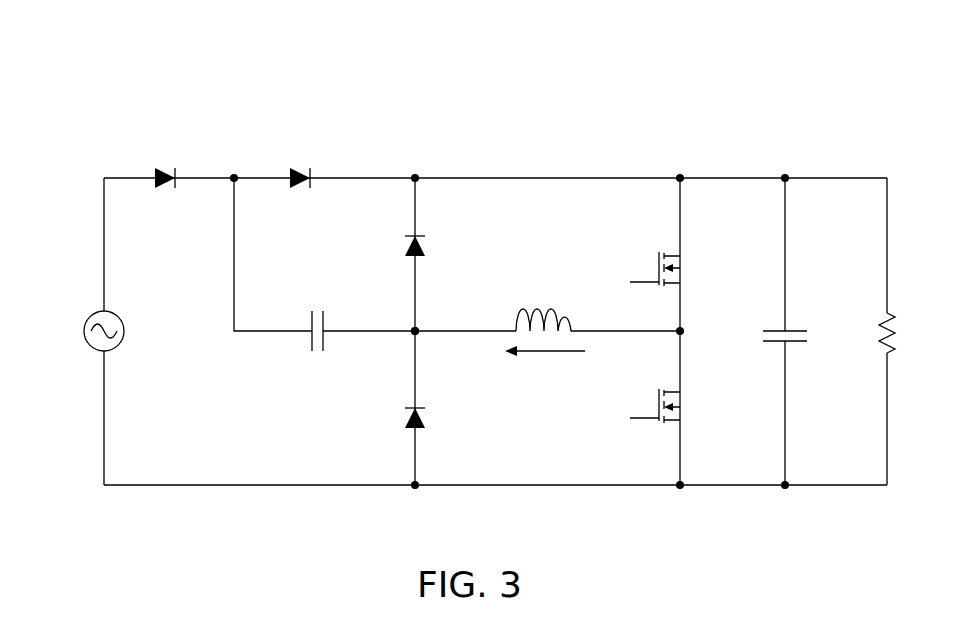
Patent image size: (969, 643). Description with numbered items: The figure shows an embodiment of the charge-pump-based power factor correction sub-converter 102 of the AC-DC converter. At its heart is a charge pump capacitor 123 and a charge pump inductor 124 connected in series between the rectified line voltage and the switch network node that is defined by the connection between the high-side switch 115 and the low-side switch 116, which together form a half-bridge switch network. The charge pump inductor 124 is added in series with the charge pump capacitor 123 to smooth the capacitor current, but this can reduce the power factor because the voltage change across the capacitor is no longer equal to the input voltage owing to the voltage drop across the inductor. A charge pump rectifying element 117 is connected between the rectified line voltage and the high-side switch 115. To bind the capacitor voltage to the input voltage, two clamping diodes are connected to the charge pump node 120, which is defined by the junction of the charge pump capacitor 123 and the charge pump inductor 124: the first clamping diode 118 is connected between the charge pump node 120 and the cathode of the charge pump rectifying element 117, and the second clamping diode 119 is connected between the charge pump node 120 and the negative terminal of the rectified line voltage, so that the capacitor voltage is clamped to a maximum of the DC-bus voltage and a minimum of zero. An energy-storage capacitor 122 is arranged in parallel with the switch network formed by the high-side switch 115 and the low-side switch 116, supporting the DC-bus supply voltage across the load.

The charge-pump-based power factor correction sub-converter 102 is at (142, 62).
The high-side switch 115 is at (682, 274).
The low-side switch 116 is at (728, 420).
The charge pump rectifying element 117 is at (291, 136).
The first clamping diode 118 is at (429, 234).
The second clamping diode 119 is at (418, 427).
The charge pump node 120 is at (415, 333).
The energy-storage capacitor 122 is at (792, 320).
The charge pump capacitor 123 is at (308, 343).
The charge pump inductor 124 is at (548, 278).